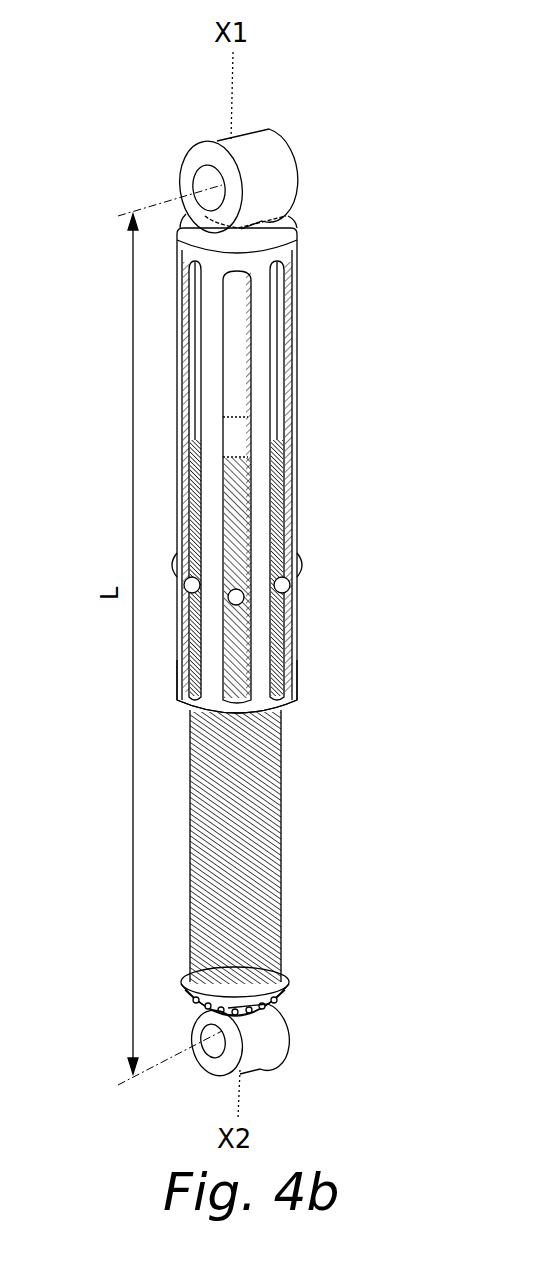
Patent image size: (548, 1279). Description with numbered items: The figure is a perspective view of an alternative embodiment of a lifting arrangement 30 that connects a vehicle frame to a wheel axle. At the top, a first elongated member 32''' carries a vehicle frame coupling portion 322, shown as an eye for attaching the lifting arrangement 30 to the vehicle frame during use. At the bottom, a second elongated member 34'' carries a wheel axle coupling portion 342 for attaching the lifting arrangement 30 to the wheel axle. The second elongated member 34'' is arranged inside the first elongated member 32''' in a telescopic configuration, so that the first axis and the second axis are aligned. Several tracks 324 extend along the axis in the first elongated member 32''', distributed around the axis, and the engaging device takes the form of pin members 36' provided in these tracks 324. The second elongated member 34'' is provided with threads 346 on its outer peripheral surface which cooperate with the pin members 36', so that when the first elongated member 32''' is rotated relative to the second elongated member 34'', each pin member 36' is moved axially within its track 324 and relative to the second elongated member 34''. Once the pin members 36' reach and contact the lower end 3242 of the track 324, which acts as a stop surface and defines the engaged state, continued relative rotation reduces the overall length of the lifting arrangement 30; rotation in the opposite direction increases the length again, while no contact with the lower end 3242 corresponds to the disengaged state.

The lifting arrangement 30 is at (340, 318).
The vehicle frame coupling portion 322 is at (268, 158).
The track 324 is at (187, 489).
The first elongated member 32''' is at (298, 480).
The engaging device (pin member) 36' is at (291, 594).
The lower end of the track 3242 is at (187, 687).
The second elongated member 34'' is at (286, 847).
The threads 346 is at (282, 928).
The wheel axle coupling portion 342 is at (262, 1038).